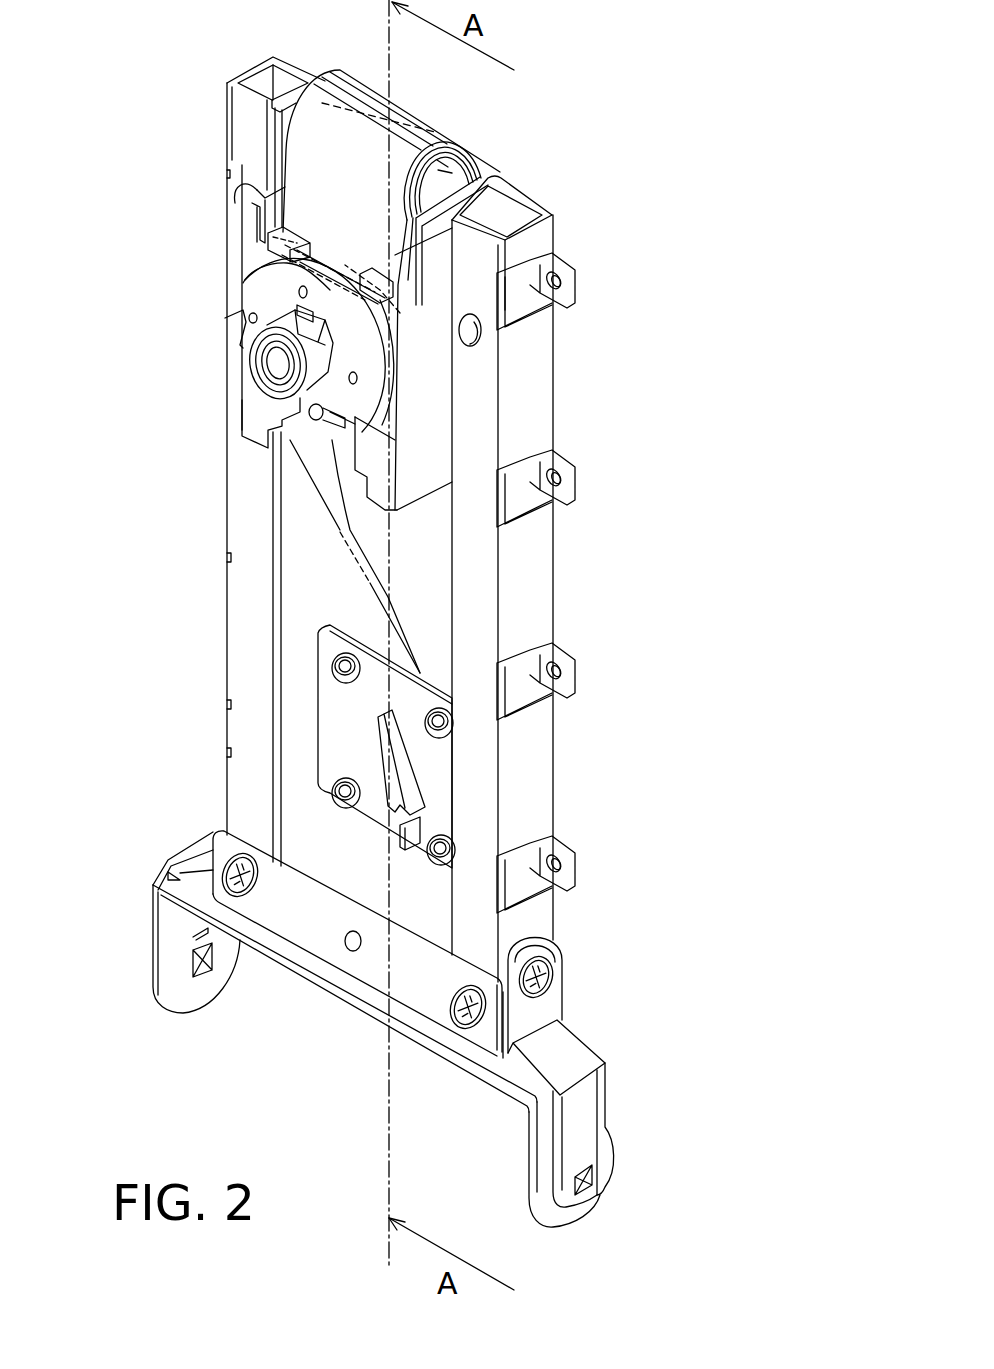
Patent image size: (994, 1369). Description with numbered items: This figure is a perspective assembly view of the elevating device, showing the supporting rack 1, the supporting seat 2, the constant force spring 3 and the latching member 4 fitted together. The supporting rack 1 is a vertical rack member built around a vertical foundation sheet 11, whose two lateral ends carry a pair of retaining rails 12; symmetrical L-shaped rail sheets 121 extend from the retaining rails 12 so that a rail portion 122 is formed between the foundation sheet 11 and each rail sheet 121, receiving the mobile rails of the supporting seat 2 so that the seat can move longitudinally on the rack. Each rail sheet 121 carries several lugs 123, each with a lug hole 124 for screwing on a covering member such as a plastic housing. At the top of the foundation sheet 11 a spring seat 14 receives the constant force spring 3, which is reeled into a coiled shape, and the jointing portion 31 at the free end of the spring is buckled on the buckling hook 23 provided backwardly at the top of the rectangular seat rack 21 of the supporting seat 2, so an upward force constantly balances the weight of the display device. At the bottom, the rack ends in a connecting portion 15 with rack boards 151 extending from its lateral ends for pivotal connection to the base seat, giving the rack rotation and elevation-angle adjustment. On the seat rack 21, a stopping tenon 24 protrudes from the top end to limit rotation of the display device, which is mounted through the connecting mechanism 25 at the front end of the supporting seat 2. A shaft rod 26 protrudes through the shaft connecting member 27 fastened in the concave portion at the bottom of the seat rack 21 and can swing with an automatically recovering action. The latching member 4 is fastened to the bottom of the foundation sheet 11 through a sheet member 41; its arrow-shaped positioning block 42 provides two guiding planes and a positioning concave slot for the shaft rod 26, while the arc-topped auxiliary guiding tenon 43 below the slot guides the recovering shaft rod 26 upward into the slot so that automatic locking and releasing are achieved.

The supporting rack 1 is at (477, 598).
The foundation sheet 11 is at (418, 545).
The retaining rails 12 is at (245, 477).
The rail sheets 121 is at (465, 772).
The rail portion 122 is at (507, 215).
The lugs 123 is at (555, 855).
The lug hole 124 is at (553, 672).
The spring seat 14 is at (462, 205).
The connecting portion 15 is at (347, 983).
The rack boards 151 is at (540, 1187).
The supporting seat 2 is at (222, 332).
The seat rack 21 is at (262, 262).
The buckling hook 23 is at (298, 232).
The stopping tenon 24 is at (292, 268).
The connecting mechanism 25 is at (258, 394).
The shaft rod 26 is at (312, 432).
The shaft connecting member 27 is at (388, 597).
The constant force spring 3 is at (413, 130).
The jointing portion 31 is at (400, 313).
The latching member 4 is at (330, 710).
The sheet member 41 is at (327, 650).
The arrow-shaped positioning block 42 is at (385, 750).
The auxiliary guiding tenon 43 is at (405, 842).